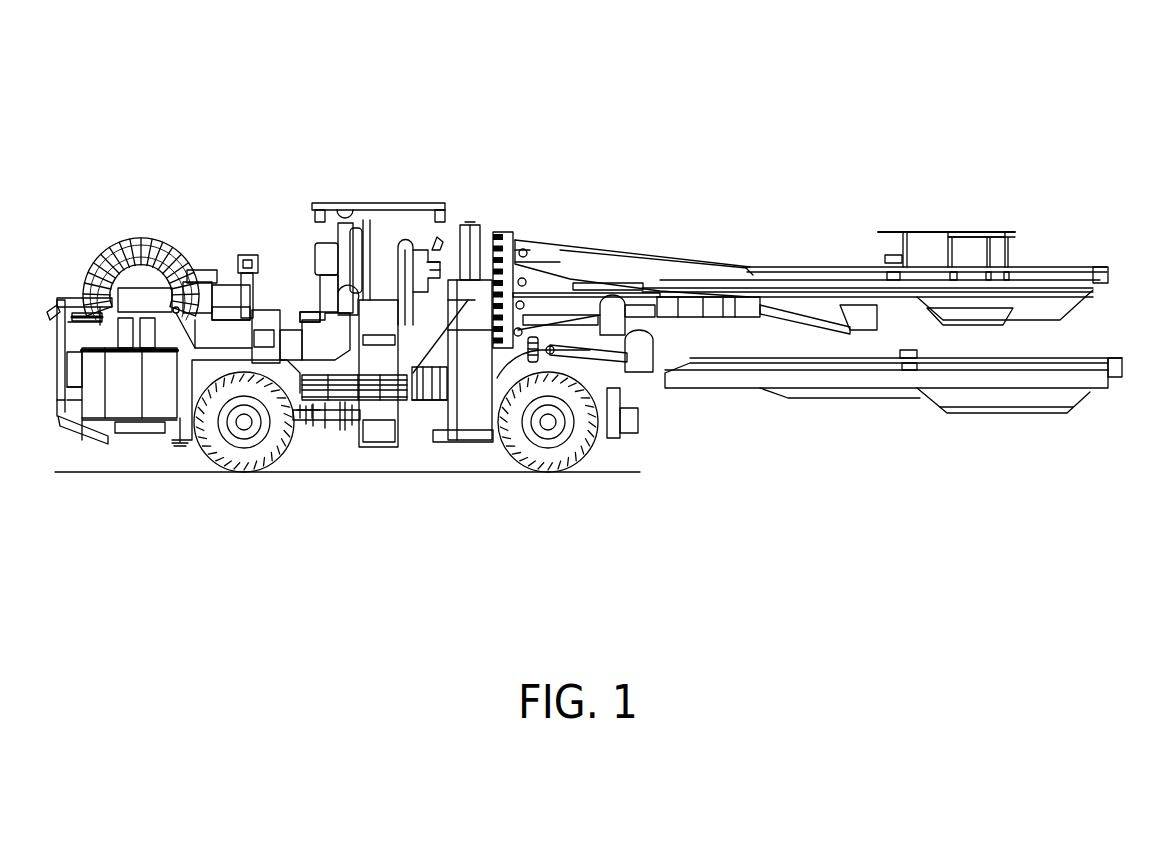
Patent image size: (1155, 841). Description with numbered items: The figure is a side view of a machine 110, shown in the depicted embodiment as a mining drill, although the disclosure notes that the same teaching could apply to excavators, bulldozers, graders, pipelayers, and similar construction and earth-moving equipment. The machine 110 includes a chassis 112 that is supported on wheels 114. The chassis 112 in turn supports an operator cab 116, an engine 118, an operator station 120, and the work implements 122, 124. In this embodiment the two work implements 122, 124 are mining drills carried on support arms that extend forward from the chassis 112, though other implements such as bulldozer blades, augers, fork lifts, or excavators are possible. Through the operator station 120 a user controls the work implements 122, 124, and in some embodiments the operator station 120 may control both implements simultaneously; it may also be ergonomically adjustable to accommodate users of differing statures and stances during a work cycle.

The machine 110 is at (935, 98).
The chassis 112 is at (475, 444).
The wheels 114 is at (243, 473).
The operator cab 116 is at (343, 202).
The engine 118 is at (268, 262).
The operator station 120 is at (398, 275).
The work implement 122 is at (823, 265).
The work implement 124 is at (858, 398).